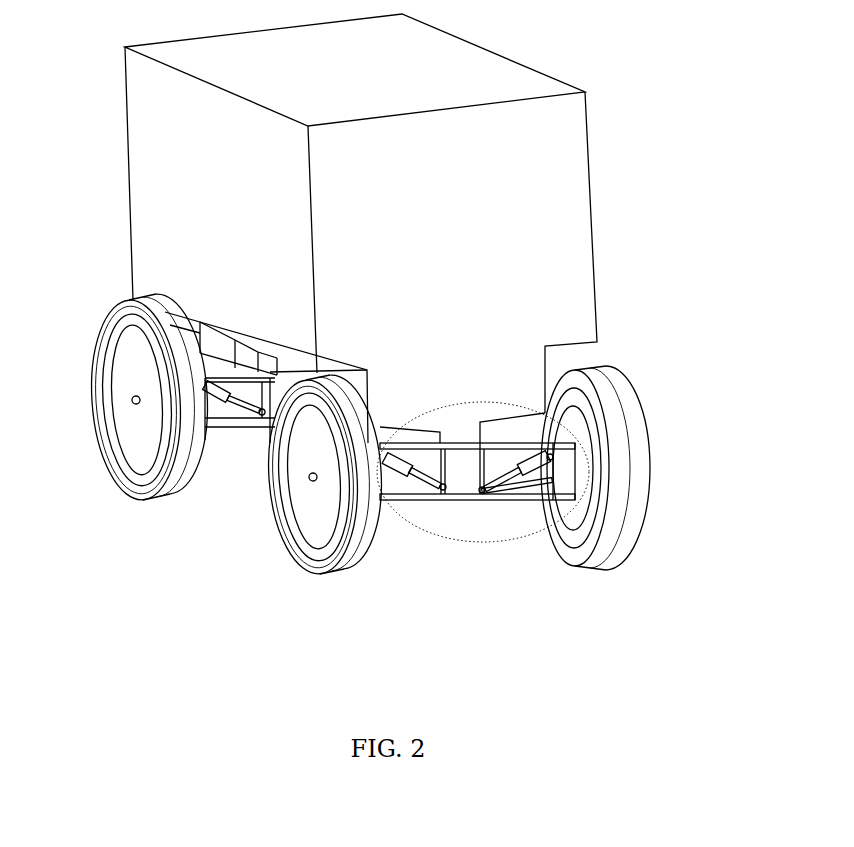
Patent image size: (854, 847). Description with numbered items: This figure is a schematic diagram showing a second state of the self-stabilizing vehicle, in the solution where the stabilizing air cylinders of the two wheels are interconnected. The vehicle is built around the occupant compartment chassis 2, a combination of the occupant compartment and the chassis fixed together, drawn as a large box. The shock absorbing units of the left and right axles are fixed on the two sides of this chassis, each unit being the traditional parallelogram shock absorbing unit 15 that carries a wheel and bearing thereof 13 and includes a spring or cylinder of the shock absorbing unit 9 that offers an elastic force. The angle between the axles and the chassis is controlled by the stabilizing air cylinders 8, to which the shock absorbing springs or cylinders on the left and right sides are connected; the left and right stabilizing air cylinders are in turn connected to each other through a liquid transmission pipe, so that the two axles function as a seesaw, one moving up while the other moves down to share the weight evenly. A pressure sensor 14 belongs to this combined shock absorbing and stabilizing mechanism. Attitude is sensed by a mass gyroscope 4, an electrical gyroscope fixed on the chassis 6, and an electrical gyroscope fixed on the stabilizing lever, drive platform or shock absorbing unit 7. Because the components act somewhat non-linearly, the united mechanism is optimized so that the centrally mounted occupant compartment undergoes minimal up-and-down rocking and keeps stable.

The occupant compartment chassis 2 is at (548, 293).
The mass gyroscope 4 is at (190, 334).
The electrical gyroscope fixed on the chassis 6 is at (268, 352).
The electrical gyroscope fixed on the stabilizing lever, drive platform or shock abs 7 is at (552, 508).
The stabilizing air cylinder 8 is at (473, 500).
The spring or cylinder of the shock absorbing unit 9 is at (528, 495).
The wheel and bearing thereof 13 is at (310, 503).
The pressure sensor 14 is at (507, 497).
The parallelogram shock absorbing unit 15 is at (396, 412).